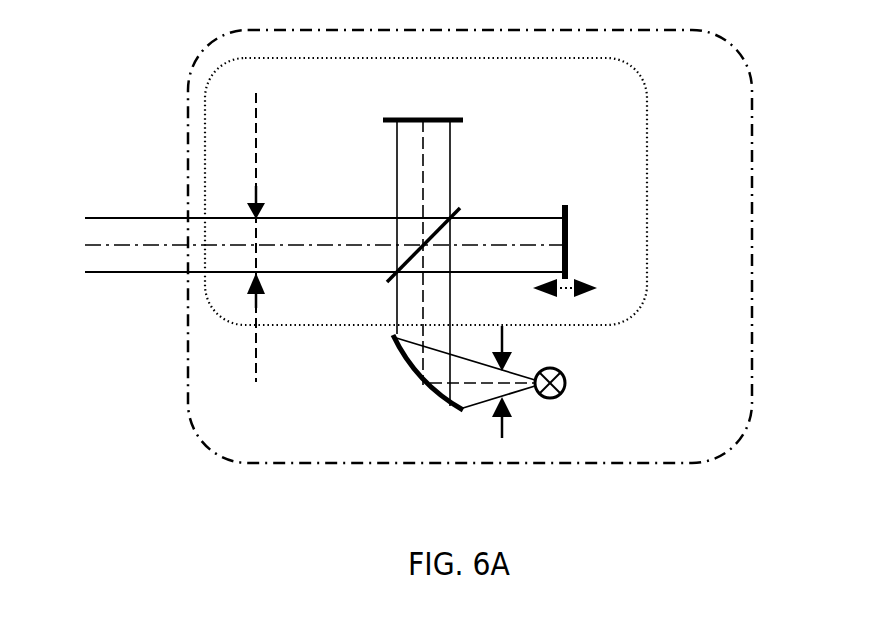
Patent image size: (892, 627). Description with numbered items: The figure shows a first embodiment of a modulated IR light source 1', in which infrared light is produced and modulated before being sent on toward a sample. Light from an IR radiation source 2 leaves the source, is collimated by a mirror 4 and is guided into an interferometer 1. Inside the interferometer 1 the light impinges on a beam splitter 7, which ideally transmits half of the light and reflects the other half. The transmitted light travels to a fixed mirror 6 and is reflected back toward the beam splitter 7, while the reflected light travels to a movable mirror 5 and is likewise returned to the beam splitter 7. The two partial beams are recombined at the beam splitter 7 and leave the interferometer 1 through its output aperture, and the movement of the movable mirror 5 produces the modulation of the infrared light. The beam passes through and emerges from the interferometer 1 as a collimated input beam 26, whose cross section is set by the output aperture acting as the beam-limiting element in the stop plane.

The modulated IR light source 1' is at (486, 239).
The interferometer 1 is at (449, 191).
The IR radiation source 2 is at (507, 382).
The mirror 4 is at (428, 380).
The movable mirror 5 is at (574, 250).
The fixed mirror 6 is at (423, 236).
The beam splitter 7 is at (444, 225).
The collimated input beam 26 is at (93, 260).